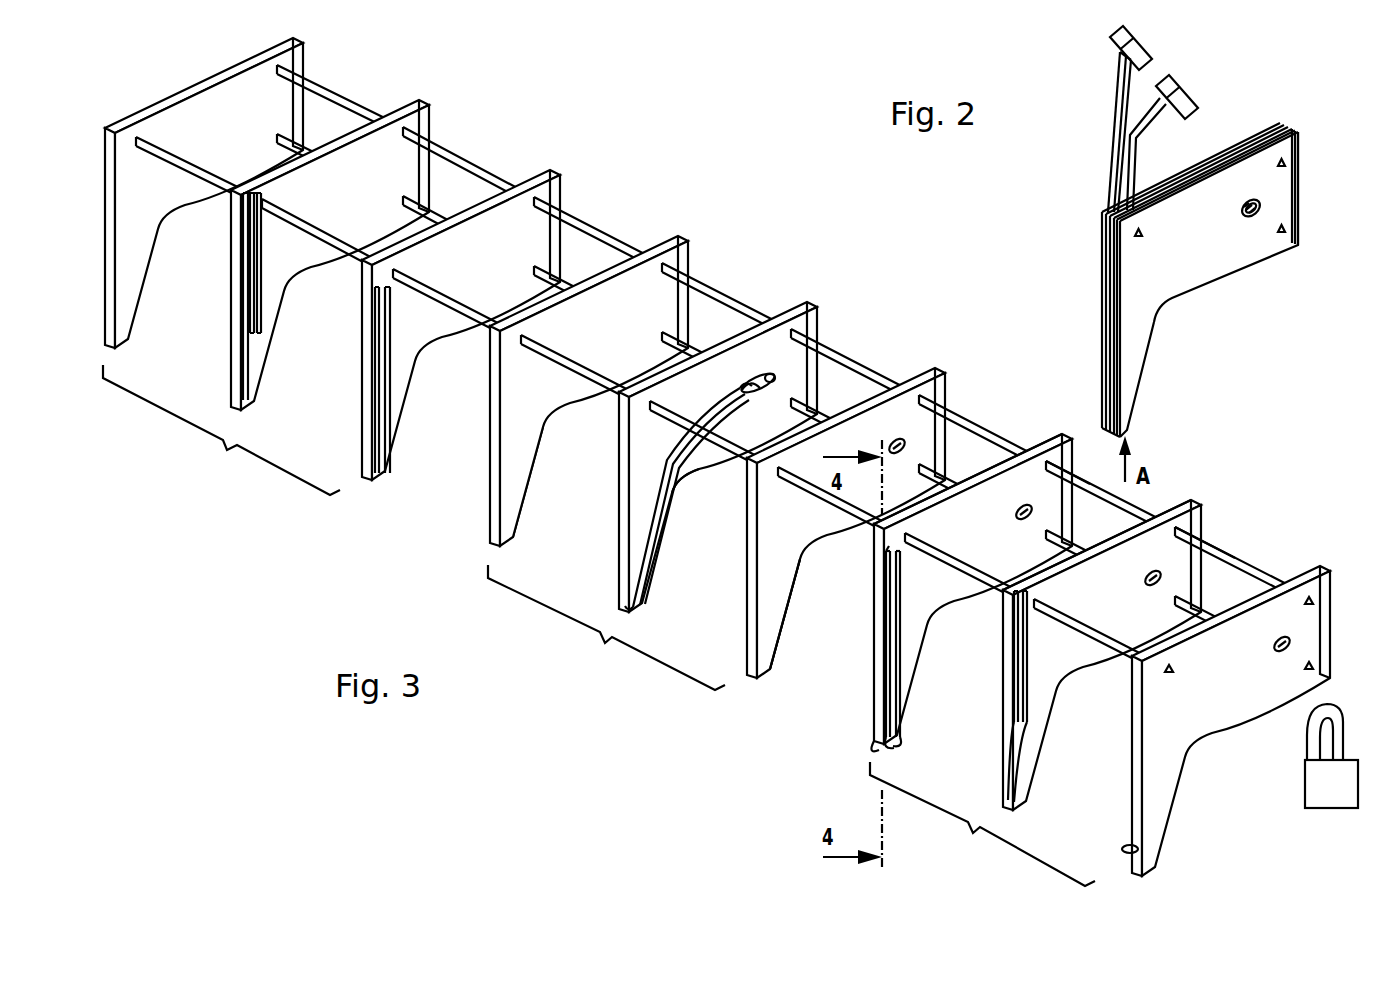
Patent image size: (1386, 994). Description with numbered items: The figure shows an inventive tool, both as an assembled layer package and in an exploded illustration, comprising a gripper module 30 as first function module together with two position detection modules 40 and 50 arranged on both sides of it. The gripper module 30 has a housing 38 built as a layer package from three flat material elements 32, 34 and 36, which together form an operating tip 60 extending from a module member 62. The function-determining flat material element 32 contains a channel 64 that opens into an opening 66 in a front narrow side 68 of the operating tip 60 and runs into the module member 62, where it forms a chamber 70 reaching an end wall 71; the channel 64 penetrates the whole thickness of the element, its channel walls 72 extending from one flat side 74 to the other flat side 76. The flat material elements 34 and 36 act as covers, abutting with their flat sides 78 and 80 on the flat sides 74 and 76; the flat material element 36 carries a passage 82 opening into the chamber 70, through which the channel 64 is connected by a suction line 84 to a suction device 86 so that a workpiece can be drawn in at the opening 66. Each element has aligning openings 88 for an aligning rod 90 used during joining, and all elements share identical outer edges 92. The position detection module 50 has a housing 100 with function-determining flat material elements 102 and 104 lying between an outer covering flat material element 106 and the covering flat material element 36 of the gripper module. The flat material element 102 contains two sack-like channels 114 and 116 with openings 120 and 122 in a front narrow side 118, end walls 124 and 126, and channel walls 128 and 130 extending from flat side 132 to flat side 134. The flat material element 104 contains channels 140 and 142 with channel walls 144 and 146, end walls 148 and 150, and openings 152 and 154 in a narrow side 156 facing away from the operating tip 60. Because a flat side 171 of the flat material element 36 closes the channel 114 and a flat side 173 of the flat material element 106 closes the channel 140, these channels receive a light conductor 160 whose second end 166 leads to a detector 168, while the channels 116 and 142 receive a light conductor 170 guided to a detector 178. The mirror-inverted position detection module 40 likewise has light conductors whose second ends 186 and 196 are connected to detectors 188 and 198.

In FIG. 3, the gripper module 30 is at (606, 627).
In FIG. 3, the flat material element 32 is at (820, 320).
In FIG. 3, the flat material element 34 is at (658, 252).
In FIG. 3, the flat material element 36 is at (896, 501).
In FIG. 2, the housing 38 is at (1160, 280).
In FIG. 3, the position detection module 40 is at (253, 266).
In FIG. 3, the position detection module 50 is at (982, 824).
In FIG. 2, the operating tip 60 is at (1158, 400).
In FIG. 2, the module member 62 is at (1197, 298).
In FIG. 3, the channel 64 is at (650, 522).
In FIG. 3, the opening 66 is at (640, 600).
In FIG. 3, the front narrow side 68 is at (633, 612).
In FIG. 3, the chamber 70 is at (775, 378).
In FIG. 3, the end wall 71 is at (778, 385).
In FIG. 3, the channel walls 72 is at (660, 433).
In FIG. 3, the flat side 74 is at (760, 372).
In FIG. 3, the flat side 76 is at (748, 378).
In FIG. 3, the flat side 78 is at (747, 545).
In FIG. 3, the flat side 80 is at (530, 375).
In FIG. 3, the passage 82 is at (905, 448).
In FIG. 3, the suction line 84 is at (1330, 720).
In FIG. 3, the suction device 86 is at (1325, 805).
In FIG. 3, the aligning openings 88 is at (578, 163).
In FIG. 3, the aligning rod 90 is at (535, 360).
In FIG. 3, the outer edges 92 is at (492, 542).
In FIG. 3, the housing 100 is at (1174, 474).
In FIG. 3, the flat material element 102 is at (996, 466).
In FIG. 3, the flat material element 104 is at (1130, 537).
In FIG. 3, the flat material element 106 is at (1265, 606).
In FIG. 3, the channel 114 is at (884, 628).
In FIG. 3, the channel 116 is at (900, 662).
In FIG. 3, the front narrow side 118 is at (903, 745).
In FIG. 3, the opening 120 is at (876, 748).
In FIG. 3, the opening 122 is at (900, 735).
In FIG. 3, the end wall 124 is at (878, 562).
In FIG. 3, the end wall 126 is at (890, 558).
In FIG. 3, the channel walls 128 is at (886, 652).
In FIG. 3, the channel walls 130 is at (897, 642).
In FIG. 3, the flat side 132 is at (1025, 466).
In FIG. 3, the flat side 134 is at (870, 532).
In FIG. 3, the channel 140 is at (1012, 760).
In FIG. 3, the channel 142 is at (1027, 700).
In FIG. 3, the channel walls 144 is at (1010, 725).
In FIG. 3, the channel walls 146 is at (1030, 725).
In FIG. 3, the end wall 148 is at (1020, 765).
In FIG. 3, the end wall 150 is at (1027, 740).
In FIG. 3, the opening 152 is at (1005, 590).
In FIG. 3, the opening 154 is at (1040, 582).
In FIG. 3, the narrow side 156 is at (1165, 508).
In FIG. 2, the light conductor 160 is at (1116, 148).
In FIG. 2, the second end 166 is at (1158, 122).
In FIG. 2, the detector 168 is at (1190, 92).
In FIG. 2, the light conductor 170 is at (1118, 182).
In FIG. 3, the flat side 171 is at (772, 635).
In FIG. 3, the flat side 173 is at (1136, 850).
In FIG. 2, the detector 178 is at (1190, 105).
In FIG. 2, the second end 186 is at (1112, 56).
In FIG. 2, the detector 188 is at (1150, 36).
In FIG. 2, the second end 196 is at (1125, 72).
In FIG. 2, the detector 198 is at (1178, 58).